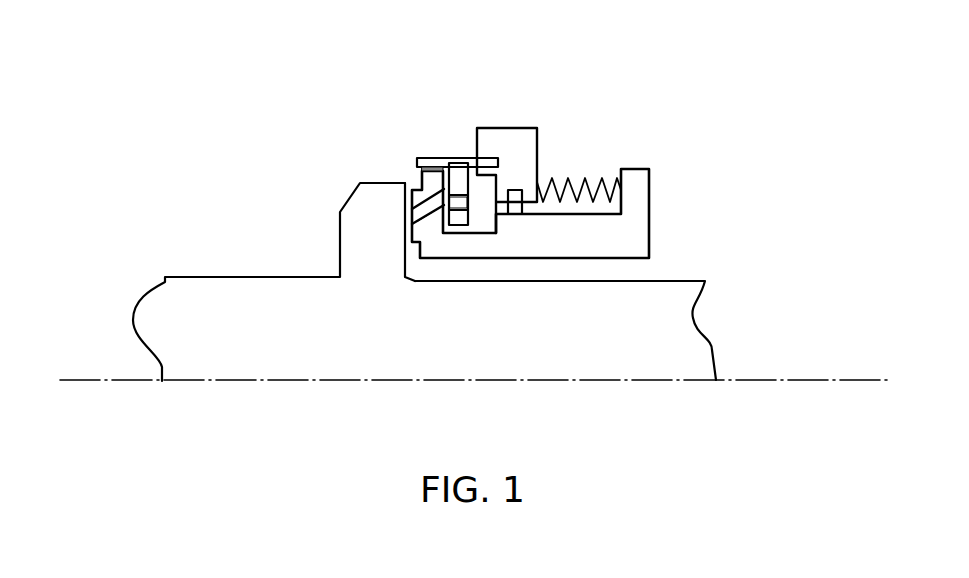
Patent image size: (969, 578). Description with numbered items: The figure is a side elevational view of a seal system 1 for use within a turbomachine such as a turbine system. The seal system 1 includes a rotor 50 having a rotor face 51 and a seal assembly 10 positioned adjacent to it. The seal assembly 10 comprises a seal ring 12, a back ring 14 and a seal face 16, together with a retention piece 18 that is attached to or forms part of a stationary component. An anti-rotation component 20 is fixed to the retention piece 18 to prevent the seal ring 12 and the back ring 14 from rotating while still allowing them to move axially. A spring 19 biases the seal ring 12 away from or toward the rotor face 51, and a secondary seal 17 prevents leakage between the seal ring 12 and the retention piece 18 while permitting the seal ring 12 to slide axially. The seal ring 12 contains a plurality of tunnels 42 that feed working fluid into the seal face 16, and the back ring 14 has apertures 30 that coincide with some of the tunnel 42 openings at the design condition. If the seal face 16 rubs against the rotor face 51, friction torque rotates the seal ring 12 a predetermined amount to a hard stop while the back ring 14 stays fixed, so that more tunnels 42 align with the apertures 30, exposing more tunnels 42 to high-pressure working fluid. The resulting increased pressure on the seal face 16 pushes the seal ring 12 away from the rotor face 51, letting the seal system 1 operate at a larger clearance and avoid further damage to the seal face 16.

The seal system 1 is at (320, 70).
The seal assembly 10 is at (594, 100).
The seal ring 12 is at (432, 195).
The back ring 14 is at (455, 176).
The seal face 16 is at (407, 202).
The secondary seal 17 is at (518, 192).
The retention piece 18 is at (518, 143).
The spring 19 is at (597, 182).
The anti-rotation component 20 is at (423, 160).
The apertures 30 is at (459, 203).
The tunnels 42 is at (427, 212).
The rotor 50 is at (392, 317).
The rotor face 51 is at (404, 248).